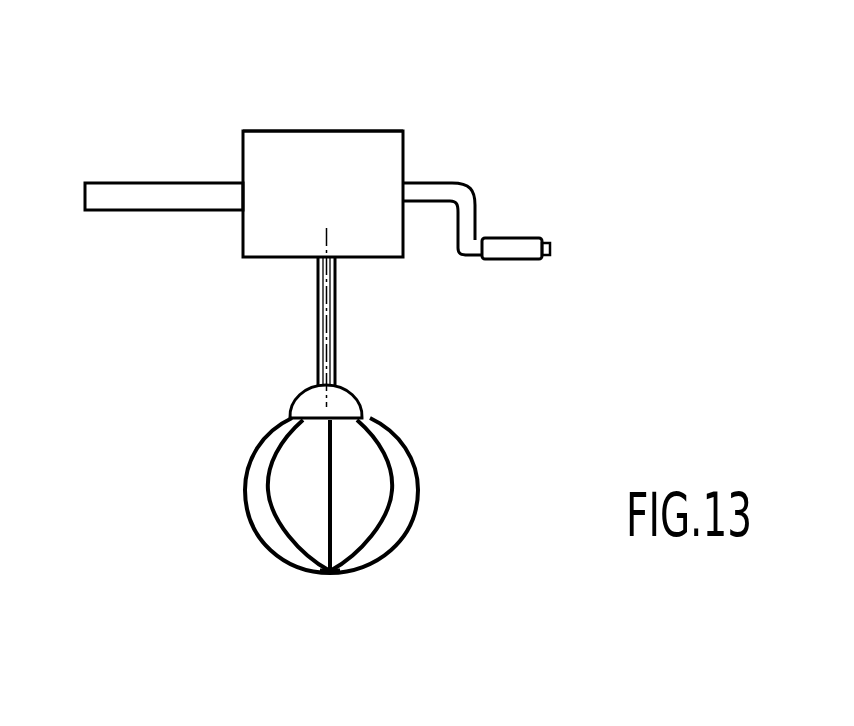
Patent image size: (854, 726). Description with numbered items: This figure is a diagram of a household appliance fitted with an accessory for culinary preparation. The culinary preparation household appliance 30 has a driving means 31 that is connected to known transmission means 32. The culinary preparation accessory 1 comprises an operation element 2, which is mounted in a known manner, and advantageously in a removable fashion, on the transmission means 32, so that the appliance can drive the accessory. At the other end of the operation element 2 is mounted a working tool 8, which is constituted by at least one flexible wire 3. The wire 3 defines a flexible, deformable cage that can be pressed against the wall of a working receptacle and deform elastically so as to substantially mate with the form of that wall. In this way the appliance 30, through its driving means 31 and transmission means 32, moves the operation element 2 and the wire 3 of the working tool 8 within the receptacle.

The culinary preparation household appliance 30 is at (358, 104).
The transmission means 32 is at (277, 130).
The driving means 31 is at (482, 200).
The operation element 2 is at (316, 344).
The culinary preparation accessory 1 is at (422, 422).
The flexible wire 3 is at (245, 478).
The working tool 8 is at (380, 570).